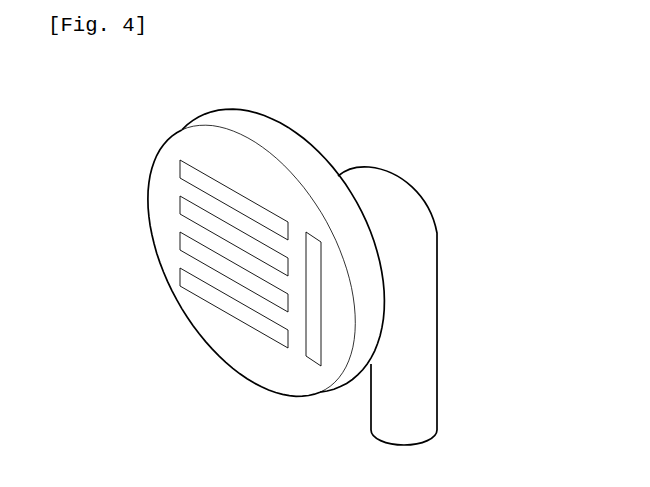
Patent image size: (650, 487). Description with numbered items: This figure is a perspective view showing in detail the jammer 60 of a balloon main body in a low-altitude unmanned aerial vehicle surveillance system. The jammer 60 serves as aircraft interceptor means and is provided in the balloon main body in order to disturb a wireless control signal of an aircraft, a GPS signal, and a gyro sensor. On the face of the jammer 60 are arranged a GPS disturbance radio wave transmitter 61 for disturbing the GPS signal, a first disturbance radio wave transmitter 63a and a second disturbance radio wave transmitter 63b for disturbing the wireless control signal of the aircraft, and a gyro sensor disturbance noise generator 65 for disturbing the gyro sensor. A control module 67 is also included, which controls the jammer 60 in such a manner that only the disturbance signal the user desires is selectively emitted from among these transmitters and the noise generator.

The jammer 60 is at (327, 145).
The GPS disturbance radio wave transmitter 61 is at (187, 172).
The first disturbance radio wave transmitter 63a is at (187, 210).
The second disturbance radio wave transmitter 63b is at (187, 245).
The gyro sensor disturbance noise generator 65 is at (187, 282).
The control module 67 is at (313, 355).